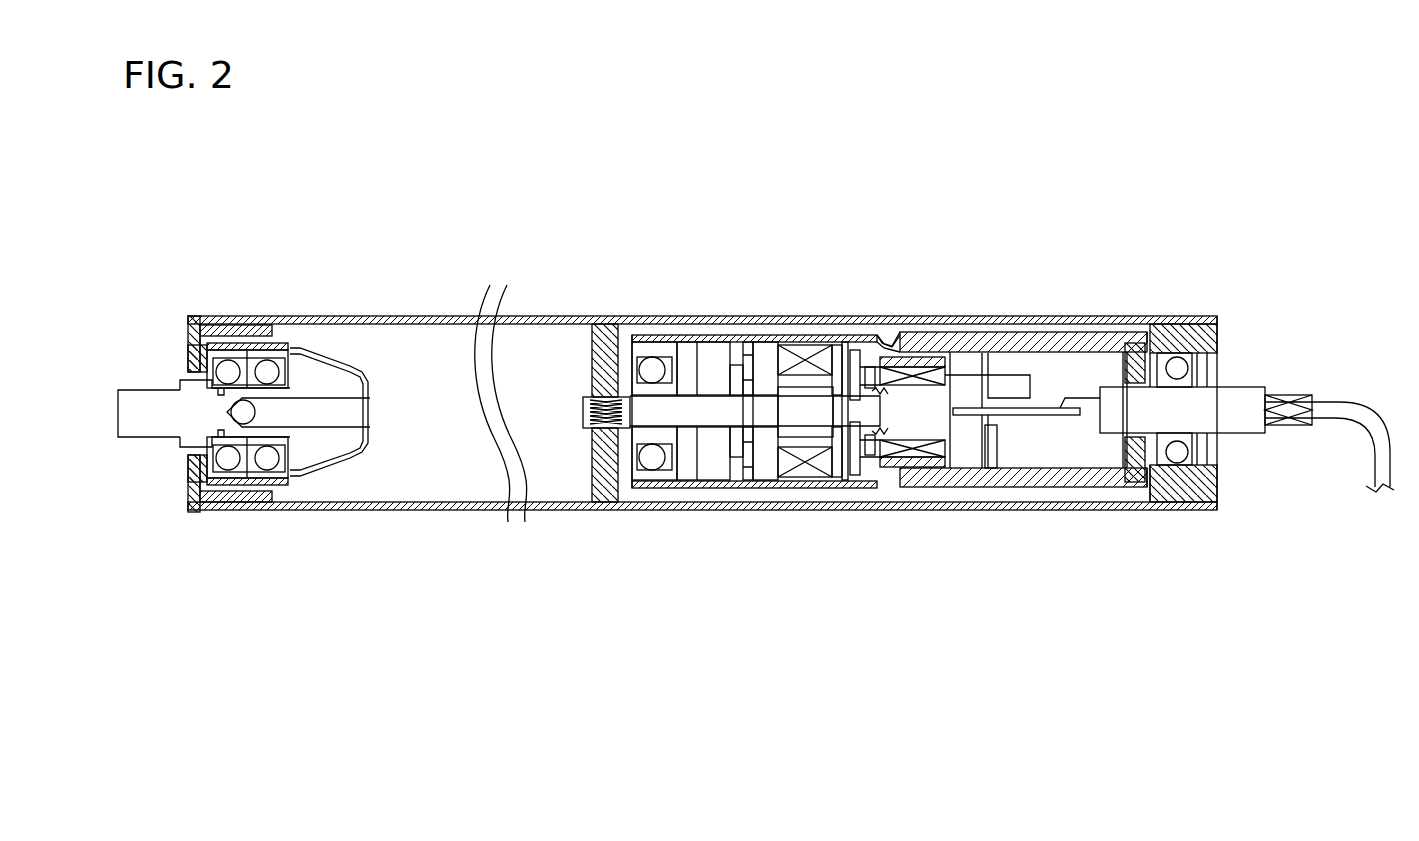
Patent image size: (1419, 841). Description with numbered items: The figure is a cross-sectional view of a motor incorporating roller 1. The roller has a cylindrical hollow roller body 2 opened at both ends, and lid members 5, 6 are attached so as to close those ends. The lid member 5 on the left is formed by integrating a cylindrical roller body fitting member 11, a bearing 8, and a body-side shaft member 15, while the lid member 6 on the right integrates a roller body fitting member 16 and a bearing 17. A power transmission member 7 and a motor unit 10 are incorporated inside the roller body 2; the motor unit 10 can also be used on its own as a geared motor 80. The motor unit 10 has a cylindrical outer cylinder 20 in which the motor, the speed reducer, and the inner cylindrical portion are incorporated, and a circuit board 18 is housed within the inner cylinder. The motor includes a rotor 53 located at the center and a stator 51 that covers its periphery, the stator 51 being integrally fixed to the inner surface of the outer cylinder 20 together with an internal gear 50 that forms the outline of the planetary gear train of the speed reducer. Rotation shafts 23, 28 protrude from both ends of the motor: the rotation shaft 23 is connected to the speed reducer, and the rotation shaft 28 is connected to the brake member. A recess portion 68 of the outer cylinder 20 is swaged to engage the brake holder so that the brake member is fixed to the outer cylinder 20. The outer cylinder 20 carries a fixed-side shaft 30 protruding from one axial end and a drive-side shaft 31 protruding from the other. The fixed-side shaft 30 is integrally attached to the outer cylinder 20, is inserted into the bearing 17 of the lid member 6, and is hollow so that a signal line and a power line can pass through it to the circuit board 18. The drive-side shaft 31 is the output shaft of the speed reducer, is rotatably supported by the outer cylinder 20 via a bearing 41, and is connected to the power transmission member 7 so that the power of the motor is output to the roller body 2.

The motor incorporating roller 1 is at (897, 218).
The roller body 2 is at (543, 318).
The lid member 5 is at (188, 335).
The lid member 6 is at (1212, 330).
The power transmission member 7 is at (612, 340).
The bearing 8 is at (272, 352).
The motor unit 10 is at (889, 364).
The geared motor 80 is at (790, 330).
The roller body fitting member 11 is at (203, 347).
The body-side shaft member 15 is at (140, 430).
The roller body fitting member 16 is at (1210, 500).
The bearing 17 is at (1168, 455).
The circuit board 18 is at (1040, 410).
The outer cylinder 20 is at (752, 345).
The rotation shaft 23 is at (757, 407).
The rotation shaft 28 is at (857, 415).
The fixed-side shaft 30 is at (1240, 402).
The drive-side shaft 31 is at (657, 417).
The bearing 41 is at (672, 340).
The internal gear 50 is at (748, 478).
The stator 51 is at (807, 470).
The rotor 53 is at (810, 395).
The recess portion 68 is at (887, 340).